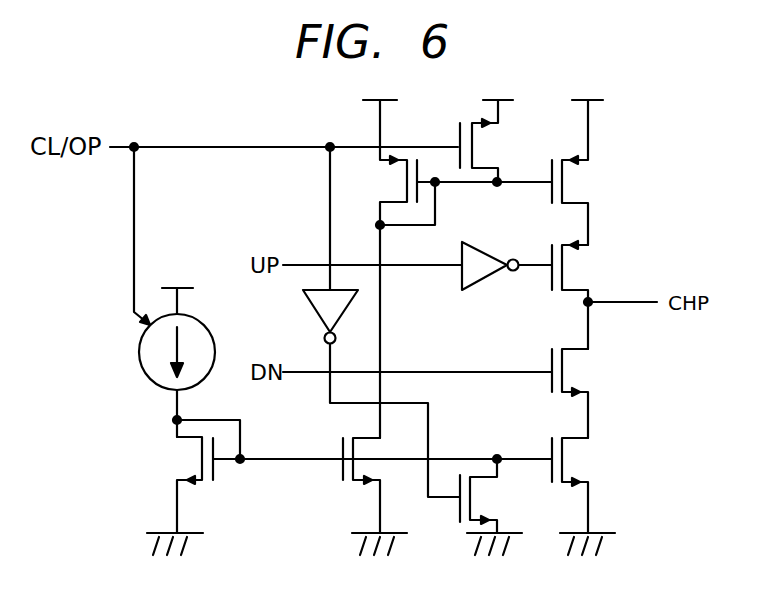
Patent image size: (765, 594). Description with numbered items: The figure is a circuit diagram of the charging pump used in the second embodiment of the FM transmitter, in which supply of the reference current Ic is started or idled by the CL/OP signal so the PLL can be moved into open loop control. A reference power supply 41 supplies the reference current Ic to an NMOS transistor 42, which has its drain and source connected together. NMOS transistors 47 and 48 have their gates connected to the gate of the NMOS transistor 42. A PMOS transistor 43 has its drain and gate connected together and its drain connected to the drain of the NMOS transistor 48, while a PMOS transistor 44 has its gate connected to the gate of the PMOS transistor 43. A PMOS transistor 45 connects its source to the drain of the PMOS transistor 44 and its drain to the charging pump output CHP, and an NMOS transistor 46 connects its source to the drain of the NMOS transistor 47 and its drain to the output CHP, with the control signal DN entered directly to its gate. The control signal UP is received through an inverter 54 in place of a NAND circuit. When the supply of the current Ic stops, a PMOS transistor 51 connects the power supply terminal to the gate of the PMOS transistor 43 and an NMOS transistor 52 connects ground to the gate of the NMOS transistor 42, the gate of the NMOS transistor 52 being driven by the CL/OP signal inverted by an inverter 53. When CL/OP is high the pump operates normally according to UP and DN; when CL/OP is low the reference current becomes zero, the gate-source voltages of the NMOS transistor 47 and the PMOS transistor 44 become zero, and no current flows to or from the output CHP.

The reference power supply 41 is at (147, 333).
The NMOS transistor 42 is at (198, 462).
The PMOS transistor 43 is at (405, 185).
The PMOS transistor 44 is at (565, 188).
The PMOS transistor 45 is at (565, 272).
The NMOS transistor 46 is at (565, 372).
The NMOS transistor 47 is at (565, 466).
The NMOS transistor 48 is at (352, 483).
The PMOS transistor 51 is at (475, 152).
The NMOS transistor 52 is at (473, 505).
The inverter 53 is at (305, 300).
The inverter 54 is at (468, 290).